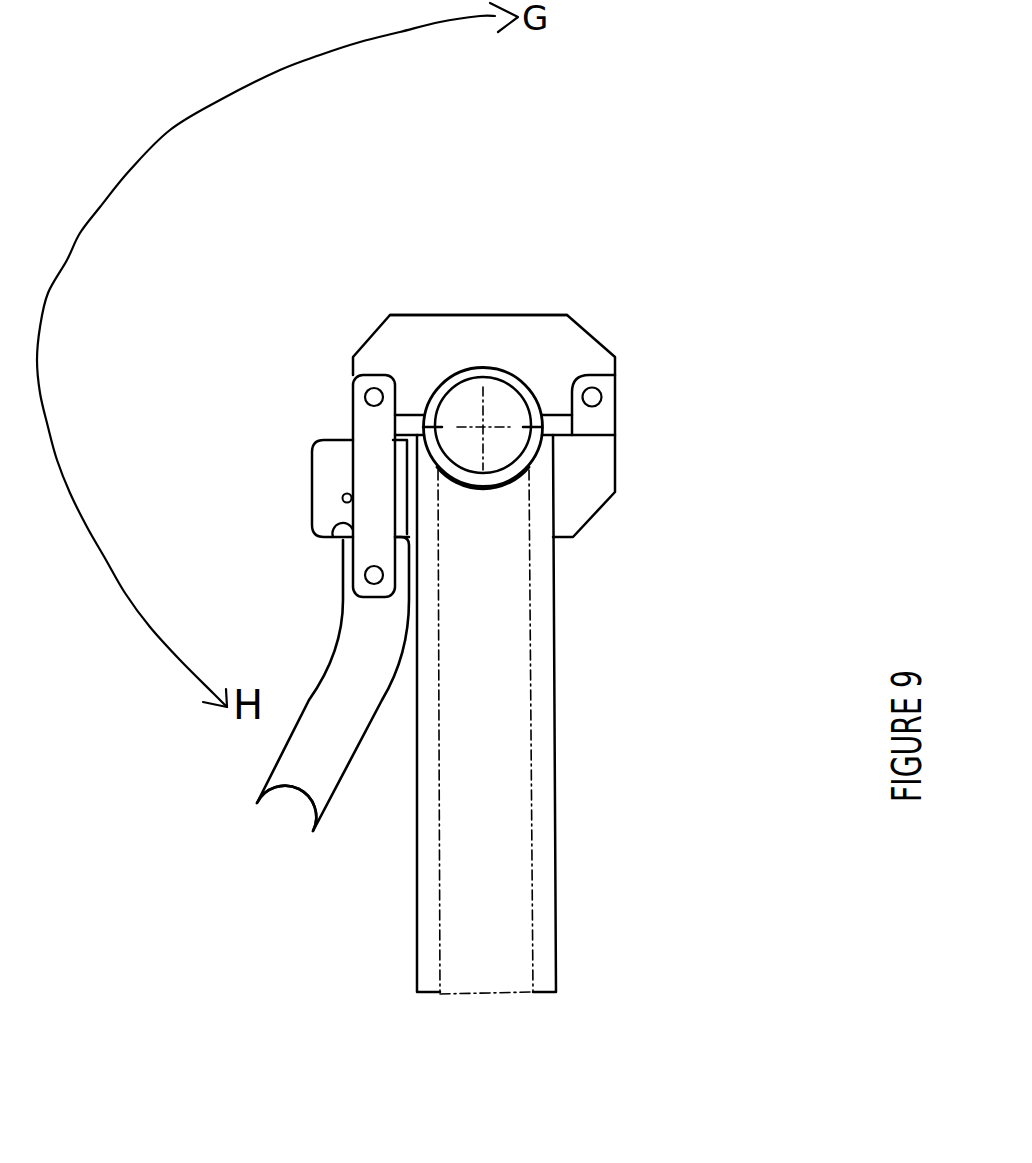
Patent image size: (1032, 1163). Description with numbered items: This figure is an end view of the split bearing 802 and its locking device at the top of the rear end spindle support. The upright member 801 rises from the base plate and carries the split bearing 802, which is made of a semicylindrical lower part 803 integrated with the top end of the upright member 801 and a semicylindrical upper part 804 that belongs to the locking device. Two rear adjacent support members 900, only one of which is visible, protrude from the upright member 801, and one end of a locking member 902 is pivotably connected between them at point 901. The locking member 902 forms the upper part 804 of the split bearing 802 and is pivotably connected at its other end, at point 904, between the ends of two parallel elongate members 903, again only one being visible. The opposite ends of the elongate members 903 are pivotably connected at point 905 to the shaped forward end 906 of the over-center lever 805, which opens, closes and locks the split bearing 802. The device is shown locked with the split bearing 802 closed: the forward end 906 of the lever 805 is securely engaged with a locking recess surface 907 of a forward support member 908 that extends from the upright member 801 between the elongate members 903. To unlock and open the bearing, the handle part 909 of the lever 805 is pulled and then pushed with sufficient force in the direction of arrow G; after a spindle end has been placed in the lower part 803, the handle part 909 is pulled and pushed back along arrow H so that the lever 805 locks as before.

The upright member 801 is at (518, 857).
The split bearing 802 is at (493, 405).
The lower part 803 is at (513, 470).
The upper part 804 is at (462, 380).
The over-center lever 805 is at (273, 743).
The rear adjacent support members 900 is at (593, 483).
The pivot point 901 is at (592, 397).
The locking member 902 is at (486, 343).
The parallel elongate members 903 is at (365, 428).
The pivot point 904 is at (374, 397).
The pivot point 905 is at (374, 575).
The shaped forward end 906 is at (353, 542).
The locking recess surface 907 is at (340, 529).
The forward support member 908 is at (325, 472).
The handle part 909 is at (305, 813).